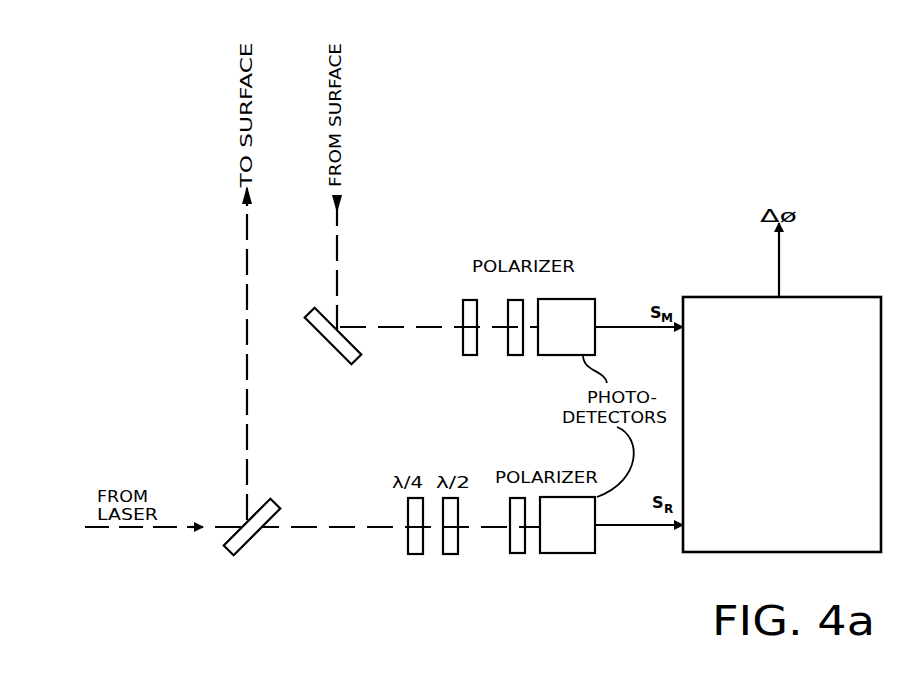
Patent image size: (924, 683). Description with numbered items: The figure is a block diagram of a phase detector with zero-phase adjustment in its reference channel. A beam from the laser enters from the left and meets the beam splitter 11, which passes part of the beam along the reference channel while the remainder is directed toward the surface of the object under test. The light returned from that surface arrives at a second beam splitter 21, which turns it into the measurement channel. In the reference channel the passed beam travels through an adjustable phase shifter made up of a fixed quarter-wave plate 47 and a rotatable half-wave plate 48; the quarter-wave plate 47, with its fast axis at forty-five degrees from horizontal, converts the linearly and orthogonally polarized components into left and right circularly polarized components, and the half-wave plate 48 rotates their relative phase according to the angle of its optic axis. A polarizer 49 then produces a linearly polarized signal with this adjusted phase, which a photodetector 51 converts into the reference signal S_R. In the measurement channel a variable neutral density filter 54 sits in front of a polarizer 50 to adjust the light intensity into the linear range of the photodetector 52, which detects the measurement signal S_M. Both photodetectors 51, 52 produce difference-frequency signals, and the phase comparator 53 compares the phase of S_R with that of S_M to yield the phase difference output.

The beam splitter 11 is at (262, 540).
The beam splitter 21 is at (325, 346).
The quarter-wave plate 47 is at (415, 554).
The half-wave plate 48 is at (450, 554).
The polarizer 49 is at (515, 553).
The polarizer 50 is at (514, 355).
The photodetector 51 is at (578, 553).
The photodetector 52 is at (596, 310).
The phase comparator 53 is at (881, 510).
The variable neutral density filter 54 is at (463, 350).